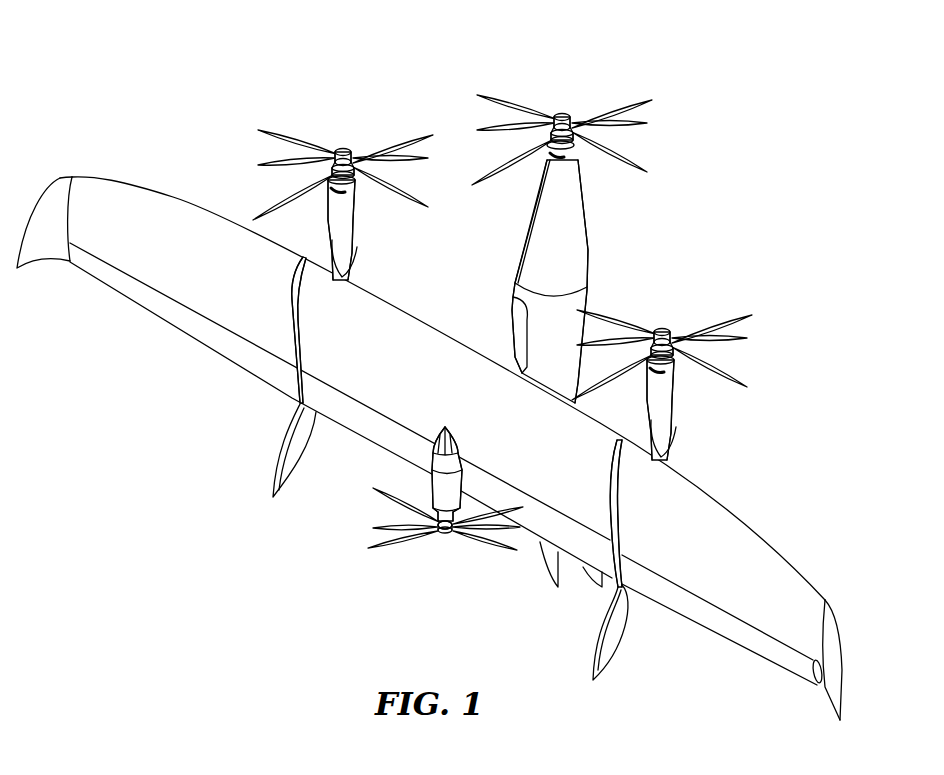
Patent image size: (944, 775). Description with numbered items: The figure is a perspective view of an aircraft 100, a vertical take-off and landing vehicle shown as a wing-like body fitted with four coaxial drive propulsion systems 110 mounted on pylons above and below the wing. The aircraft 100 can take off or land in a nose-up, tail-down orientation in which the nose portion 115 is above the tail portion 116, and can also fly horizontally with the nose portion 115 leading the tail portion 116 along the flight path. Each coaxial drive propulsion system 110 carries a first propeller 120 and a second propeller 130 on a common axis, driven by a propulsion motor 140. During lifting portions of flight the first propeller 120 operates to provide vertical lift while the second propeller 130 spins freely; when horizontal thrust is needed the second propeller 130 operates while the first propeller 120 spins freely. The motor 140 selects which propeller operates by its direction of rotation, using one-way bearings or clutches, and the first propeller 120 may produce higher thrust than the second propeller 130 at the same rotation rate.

The aircraft 100 is at (112, 67).
The coaxial drive propulsion system 110 is at (348, 128).
The nose portion 115 is at (699, 176).
The tail portion 116 is at (315, 590).
The first propeller 120 is at (413, 203).
The second propeller 130 is at (393, 167).
The propulsion motor 140 is at (352, 188).